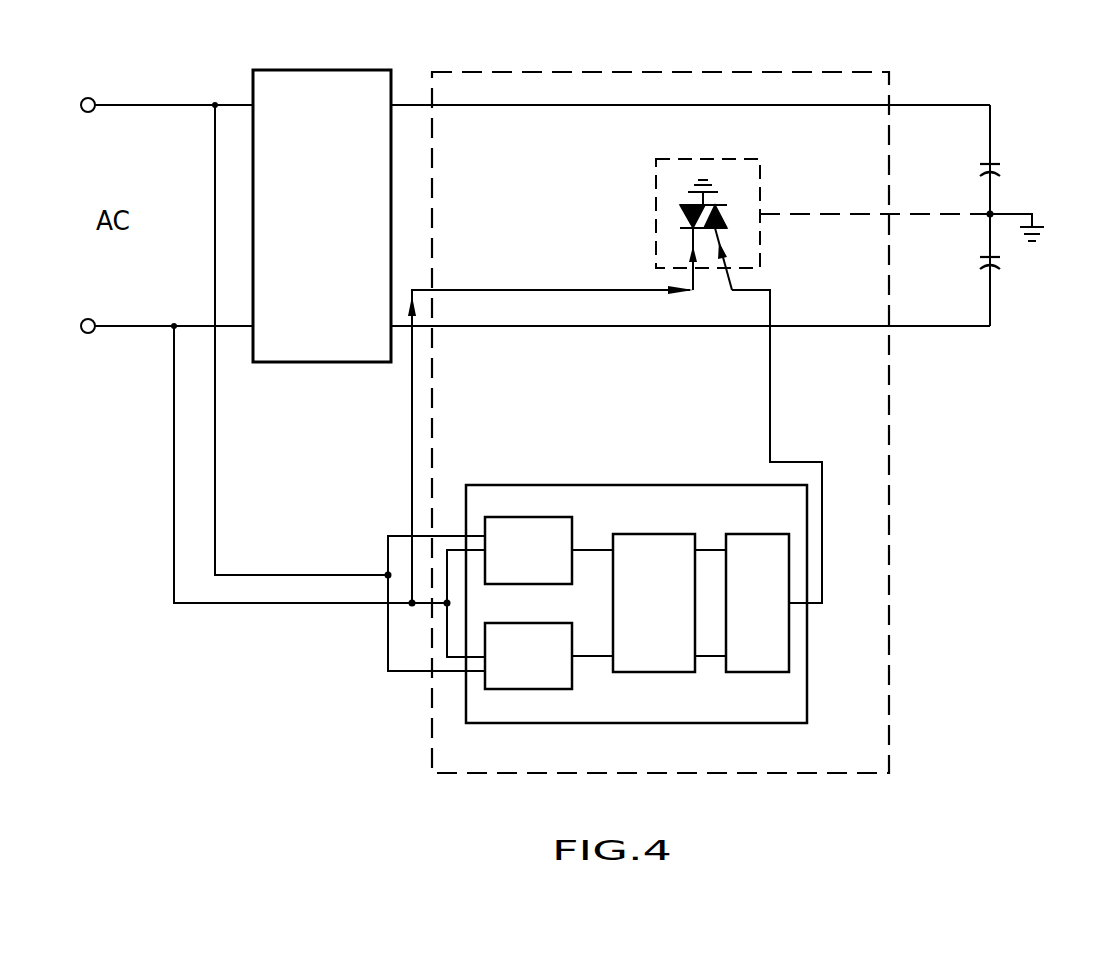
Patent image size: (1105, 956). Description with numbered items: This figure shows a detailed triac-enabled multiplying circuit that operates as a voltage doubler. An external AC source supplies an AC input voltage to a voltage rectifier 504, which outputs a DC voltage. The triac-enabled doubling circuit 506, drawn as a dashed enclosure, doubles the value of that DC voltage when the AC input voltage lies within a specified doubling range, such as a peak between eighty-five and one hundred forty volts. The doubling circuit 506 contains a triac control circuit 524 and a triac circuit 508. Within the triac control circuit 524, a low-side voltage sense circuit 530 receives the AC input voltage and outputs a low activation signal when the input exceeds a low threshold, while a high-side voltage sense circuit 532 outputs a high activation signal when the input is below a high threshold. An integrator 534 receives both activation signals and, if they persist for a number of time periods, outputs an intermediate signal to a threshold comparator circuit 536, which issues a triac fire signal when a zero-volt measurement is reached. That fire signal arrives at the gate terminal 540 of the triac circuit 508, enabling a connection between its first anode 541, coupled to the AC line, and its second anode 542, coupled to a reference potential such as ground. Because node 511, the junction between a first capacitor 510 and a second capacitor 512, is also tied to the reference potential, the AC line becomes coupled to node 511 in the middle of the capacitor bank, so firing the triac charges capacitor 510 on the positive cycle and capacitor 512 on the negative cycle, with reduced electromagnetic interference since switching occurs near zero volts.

The voltage rectifier 504 is at (298, 248).
The triac-enabled doubling circuit 506 is at (660, 72).
The triac circuit 508 is at (708, 159).
The first capacitor 510 is at (1002, 165).
The node 511 is at (1045, 231).
The second capacitor 512 is at (1002, 265).
The triac control circuit 524 is at (634, 761).
The low-side voltage sense circuit 530 is at (505, 568).
The high-side voltage sense circuit 532 is at (505, 672).
The integrator 534 is at (629, 618).
The threshold comparator circuit 536 is at (734, 618).
The gate terminal 540 is at (723, 238).
The first anode 541 is at (690, 243).
The second anode 542 is at (706, 206).